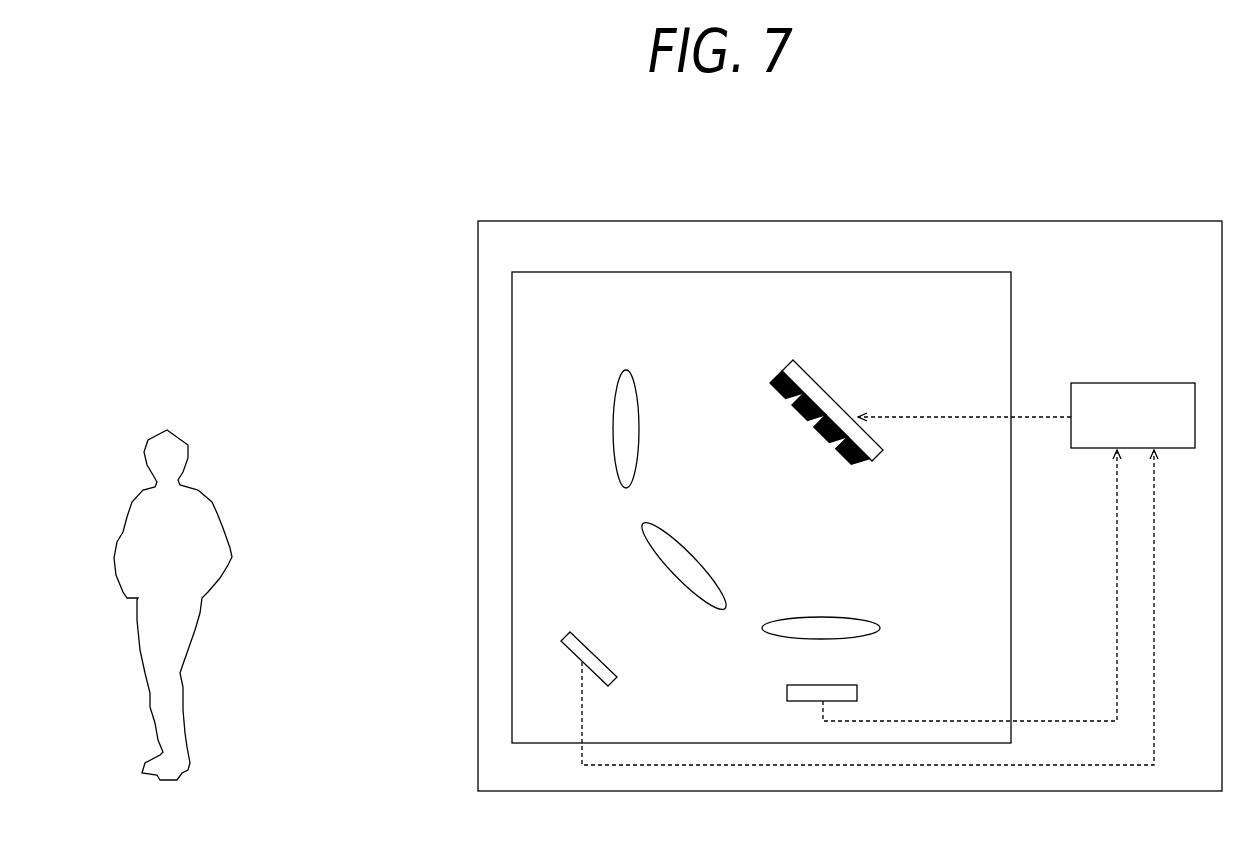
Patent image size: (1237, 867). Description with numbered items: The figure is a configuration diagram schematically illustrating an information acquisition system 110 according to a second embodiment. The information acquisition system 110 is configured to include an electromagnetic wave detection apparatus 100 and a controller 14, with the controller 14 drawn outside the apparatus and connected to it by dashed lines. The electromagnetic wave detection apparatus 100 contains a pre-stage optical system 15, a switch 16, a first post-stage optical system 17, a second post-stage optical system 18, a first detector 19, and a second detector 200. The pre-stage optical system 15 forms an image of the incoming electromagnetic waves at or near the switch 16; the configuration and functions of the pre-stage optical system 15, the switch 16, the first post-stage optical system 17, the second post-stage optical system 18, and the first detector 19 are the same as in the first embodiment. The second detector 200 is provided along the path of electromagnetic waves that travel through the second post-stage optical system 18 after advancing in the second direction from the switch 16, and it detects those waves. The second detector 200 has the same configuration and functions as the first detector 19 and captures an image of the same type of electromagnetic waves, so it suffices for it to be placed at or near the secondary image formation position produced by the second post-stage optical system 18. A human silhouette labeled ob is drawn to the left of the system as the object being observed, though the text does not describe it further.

The information acquisition system 110 is at (477, 250).
The electromagnetic wave detection apparatus 100 is at (862, 271).
The controller 14 is at (1134, 383).
The pre-stage optical system 15 is at (626, 369).
The switch 16 is at (824, 390).
The first post-stage optical system 17 is at (643, 535).
The second post-stage optical system 18 is at (881, 628).
The first detector 19 is at (616, 678).
The second detector 200 is at (858, 692).
The object ob is at (212, 521).